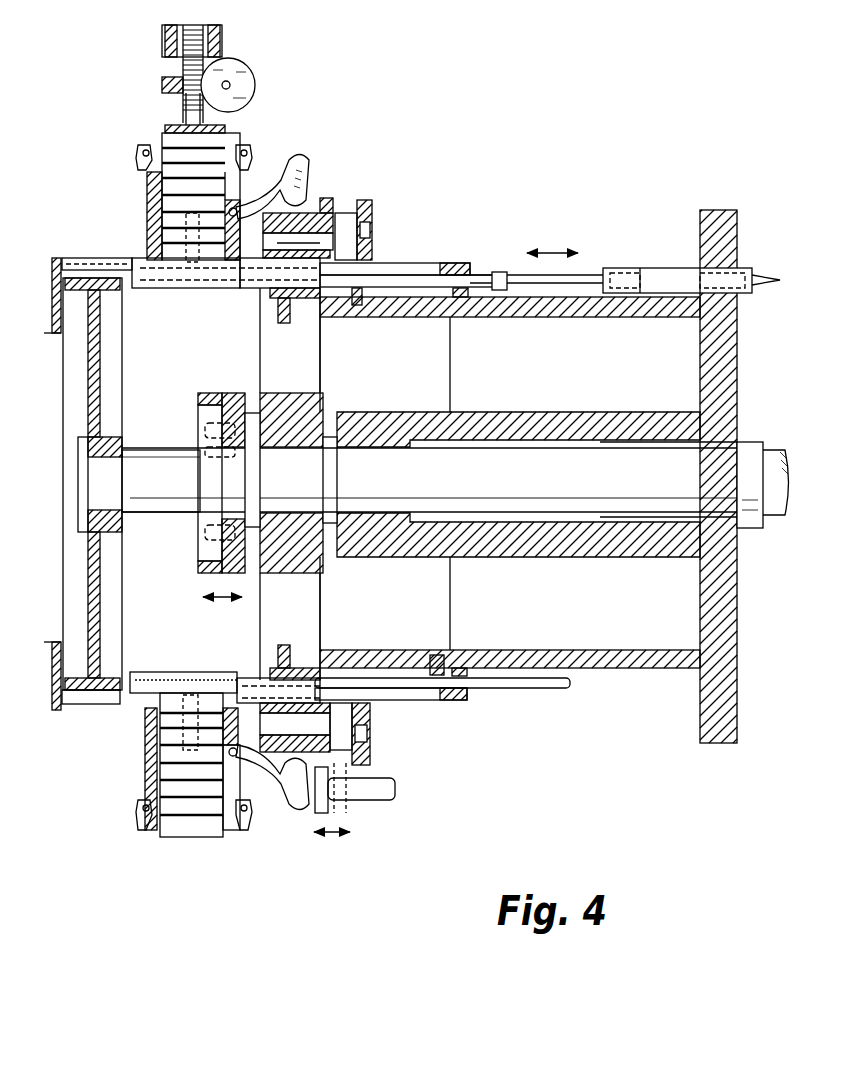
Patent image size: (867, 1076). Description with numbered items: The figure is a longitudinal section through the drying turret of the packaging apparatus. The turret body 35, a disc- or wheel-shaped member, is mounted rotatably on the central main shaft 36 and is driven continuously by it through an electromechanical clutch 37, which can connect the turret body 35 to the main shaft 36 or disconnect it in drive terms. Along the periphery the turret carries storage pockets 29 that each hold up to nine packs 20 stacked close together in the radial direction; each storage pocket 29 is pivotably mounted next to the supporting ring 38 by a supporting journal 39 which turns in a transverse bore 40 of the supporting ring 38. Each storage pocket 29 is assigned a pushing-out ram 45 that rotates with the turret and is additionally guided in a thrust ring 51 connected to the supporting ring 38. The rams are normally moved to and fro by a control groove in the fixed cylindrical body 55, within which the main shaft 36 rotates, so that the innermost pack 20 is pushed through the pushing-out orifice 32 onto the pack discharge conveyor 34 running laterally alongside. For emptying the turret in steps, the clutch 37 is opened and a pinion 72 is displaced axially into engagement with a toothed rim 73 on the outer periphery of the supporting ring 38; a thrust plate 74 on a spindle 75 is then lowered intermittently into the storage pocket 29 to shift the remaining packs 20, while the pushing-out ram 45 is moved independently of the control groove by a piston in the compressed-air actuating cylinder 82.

The pack 20 is at (175, 155).
The storage pocket 29 is at (257, 146).
The pushing-out orifice 32 is at (153, 698).
The pack discharge conveyor 34 is at (76, 262).
The turret body 35 is at (307, 153).
The main shaft 36 is at (772, 443).
The electromechanical clutch 37 is at (200, 571).
The supporting ring 38 is at (304, 212).
The supporting journal 39 is at (334, 214).
The transverse bore 40 is at (283, 258).
The pushing-out ram 45 is at (482, 268).
The thrust ring 51 is at (453, 703).
The cylindrical body 55 is at (742, 357).
The pinion 72 is at (313, 807).
The toothed rim 73 is at (371, 753).
The thrust plate 74 is at (178, 125).
The spindle 75 is at (184, 42).
The actuating cylinder 82 is at (653, 277).